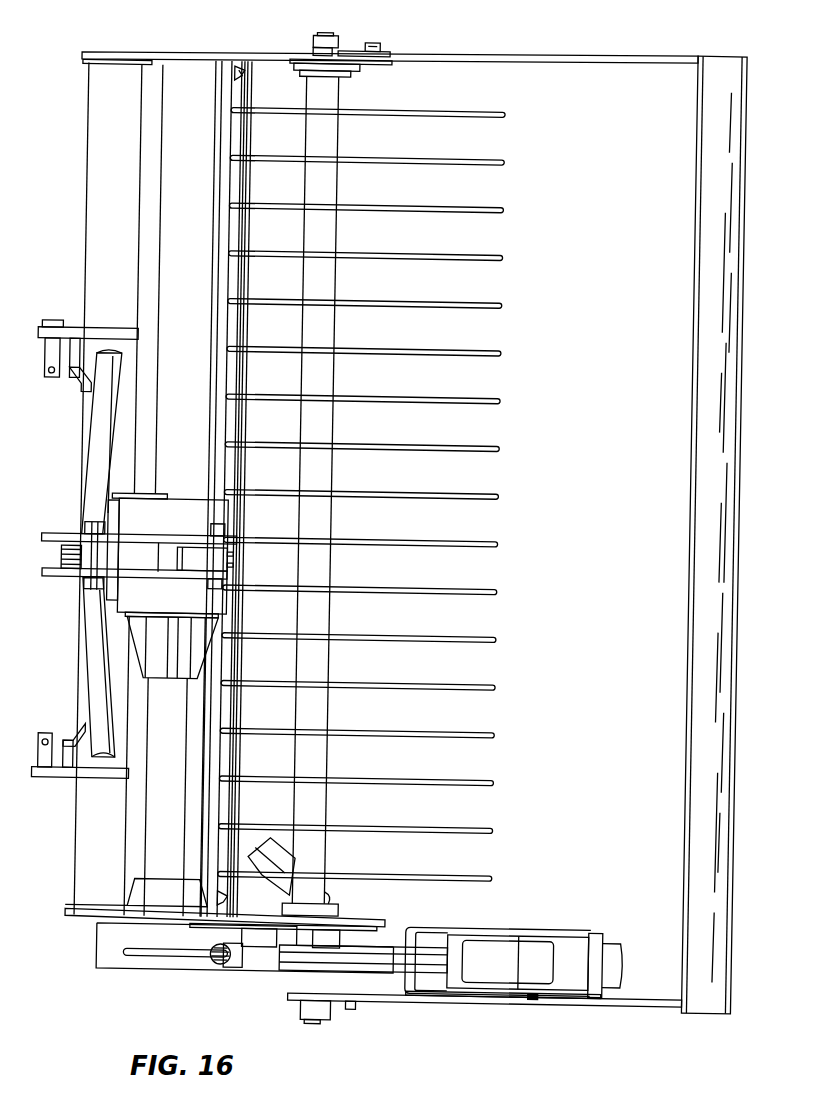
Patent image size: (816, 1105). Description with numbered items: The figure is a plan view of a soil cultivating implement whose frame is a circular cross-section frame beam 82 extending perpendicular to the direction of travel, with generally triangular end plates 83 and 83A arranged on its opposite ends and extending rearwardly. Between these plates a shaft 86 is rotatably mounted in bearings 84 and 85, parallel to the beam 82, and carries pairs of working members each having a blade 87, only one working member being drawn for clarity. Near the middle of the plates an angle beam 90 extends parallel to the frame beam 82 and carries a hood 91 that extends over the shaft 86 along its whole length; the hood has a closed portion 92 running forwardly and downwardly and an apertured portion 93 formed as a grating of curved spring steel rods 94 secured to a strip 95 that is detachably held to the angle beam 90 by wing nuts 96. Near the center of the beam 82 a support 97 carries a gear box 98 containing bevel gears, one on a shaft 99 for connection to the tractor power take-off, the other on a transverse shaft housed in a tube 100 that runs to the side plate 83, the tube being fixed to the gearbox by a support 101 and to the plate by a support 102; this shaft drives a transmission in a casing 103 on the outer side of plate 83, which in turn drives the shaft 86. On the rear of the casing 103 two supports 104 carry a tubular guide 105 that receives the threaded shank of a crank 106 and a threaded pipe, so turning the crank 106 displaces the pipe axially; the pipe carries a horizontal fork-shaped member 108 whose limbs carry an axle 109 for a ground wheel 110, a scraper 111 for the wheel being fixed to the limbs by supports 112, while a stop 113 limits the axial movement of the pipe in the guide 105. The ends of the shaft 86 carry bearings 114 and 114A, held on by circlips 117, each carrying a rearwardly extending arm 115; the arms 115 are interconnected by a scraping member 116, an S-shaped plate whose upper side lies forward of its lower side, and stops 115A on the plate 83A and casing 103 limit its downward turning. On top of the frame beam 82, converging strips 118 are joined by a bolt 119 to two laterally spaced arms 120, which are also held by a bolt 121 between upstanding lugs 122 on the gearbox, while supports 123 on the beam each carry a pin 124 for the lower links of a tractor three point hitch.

The frame beam 82 is at (89, 108).
The end plate 83 is at (74, 913).
The end plate 83A is at (189, 49).
The bearing 84 is at (338, 903).
The bearing 85 is at (339, 71).
The shaft 86 is at (326, 225).
The blade 87 is at (273, 876).
The angle beam 90 is at (217, 128).
The hood 91 is at (238, 372).
The closed portion 92 is at (165, 205).
The apertured portion 93 is at (498, 297).
The rods 94 is at (454, 156).
The strip 95 is at (242, 185).
The wing nuts 96 is at (235, 81).
The support 97 is at (178, 490).
The gear box 98 is at (222, 516).
The shaft 99 is at (57, 532).
The tube 100 is at (172, 788).
The support 101 is at (183, 666).
The support 102 is at (142, 883).
The casing 103 is at (112, 956).
The supports 104 is at (234, 940).
The tubular guide 105 is at (263, 964).
The crank 106 is at (183, 953).
The fork-shaped member 108 is at (508, 1008).
The axle 109 is at (547, 996).
The ground wheel 110 is at (491, 934).
The scraper 111 is at (617, 956).
The supports 112 is at (596, 927).
The stop 113 is at (437, 950).
The bearing 114 is at (328, 963).
The bearing 114A is at (299, 54).
The arm 115 is at (549, 52).
The stop 115A is at (382, 43).
The scraping member 116 is at (703, 512).
The circlips 117 is at (317, 28).
The strips 118 is at (102, 430).
The bolt 119 is at (100, 584).
The arms 120 is at (157, 571).
The bolt 121 is at (220, 586).
The lugs 122 is at (240, 563).
The supports 123 is at (106, 325).
The pin 124 is at (54, 364).